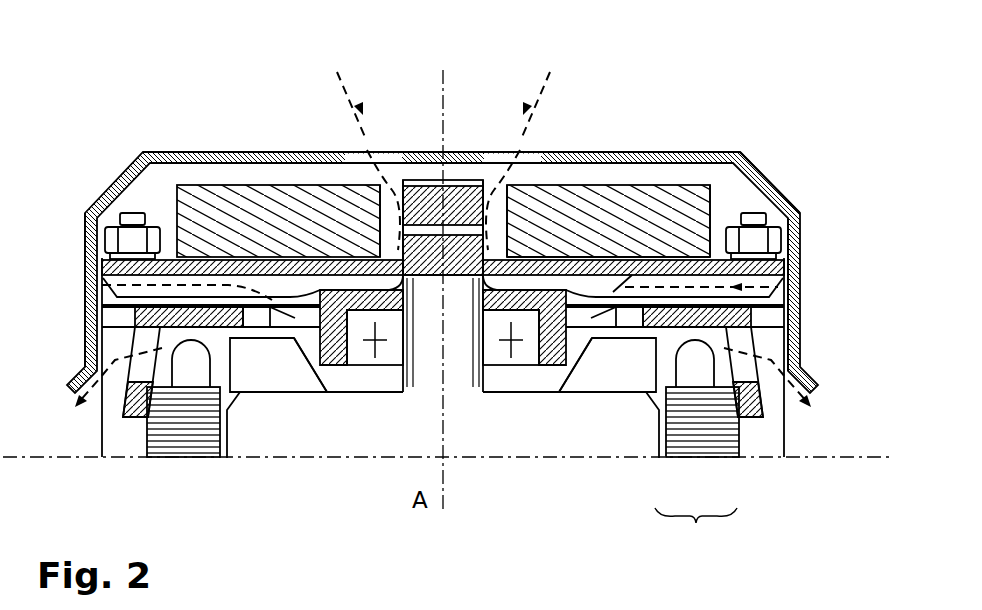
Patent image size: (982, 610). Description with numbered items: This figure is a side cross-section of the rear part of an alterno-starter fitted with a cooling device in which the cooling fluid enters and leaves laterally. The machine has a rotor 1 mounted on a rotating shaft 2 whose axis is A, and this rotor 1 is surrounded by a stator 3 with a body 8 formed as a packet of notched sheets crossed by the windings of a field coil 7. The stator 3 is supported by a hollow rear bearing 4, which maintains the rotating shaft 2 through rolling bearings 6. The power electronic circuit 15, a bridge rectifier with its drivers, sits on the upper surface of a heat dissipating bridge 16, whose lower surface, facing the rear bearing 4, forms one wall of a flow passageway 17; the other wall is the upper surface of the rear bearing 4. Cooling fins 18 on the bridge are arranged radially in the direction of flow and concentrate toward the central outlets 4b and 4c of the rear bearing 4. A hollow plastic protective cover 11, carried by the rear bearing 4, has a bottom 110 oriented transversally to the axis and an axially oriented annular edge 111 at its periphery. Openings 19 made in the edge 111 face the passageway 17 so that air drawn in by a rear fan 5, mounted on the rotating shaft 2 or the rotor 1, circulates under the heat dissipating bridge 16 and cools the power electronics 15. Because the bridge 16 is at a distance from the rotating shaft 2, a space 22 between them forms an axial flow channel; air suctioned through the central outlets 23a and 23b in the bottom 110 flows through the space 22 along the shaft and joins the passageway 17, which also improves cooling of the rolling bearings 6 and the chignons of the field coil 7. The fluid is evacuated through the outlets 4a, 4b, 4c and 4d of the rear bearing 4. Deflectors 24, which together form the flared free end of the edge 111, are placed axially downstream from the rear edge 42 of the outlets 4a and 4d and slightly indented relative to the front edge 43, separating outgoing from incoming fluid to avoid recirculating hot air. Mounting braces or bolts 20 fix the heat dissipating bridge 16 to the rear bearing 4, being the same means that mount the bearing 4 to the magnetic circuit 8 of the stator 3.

The rotor 1 is at (370, 427).
The rotating shaft 2 is at (458, 380).
The stator 3 is at (696, 532).
The rear bearing 4 is at (137, 415).
The outlet 4a is at (135, 345).
The central outlet 4b is at (312, 365).
The central outlet 4c is at (587, 335).
The outlet 4d is at (757, 368).
The rear fan 5 is at (258, 372).
The rolling bearings 6 is at (527, 355).
The field coil 7 is at (712, 400).
The body 8 is at (690, 380).
The protective cover 11 is at (233, 152).
The power electronic circuit 15 is at (603, 220).
The heat dissipating bridge 16 is at (683, 250).
The flow passageway 17 is at (770, 293).
The cooling fins 18 is at (642, 257).
The openings 19 is at (800, 272).
The mounting braces or bolts 20 is at (132, 223).
The space 22 is at (392, 200).
The central outlet 23a is at (528, 155).
The central outlet 23b is at (353, 150).
The deflectors 24 is at (67, 363).
The rear edge 42 is at (88, 272).
The front edge 43 is at (88, 300).
The bottom 110 is at (740, 153).
The annular edge 111 is at (85, 227).